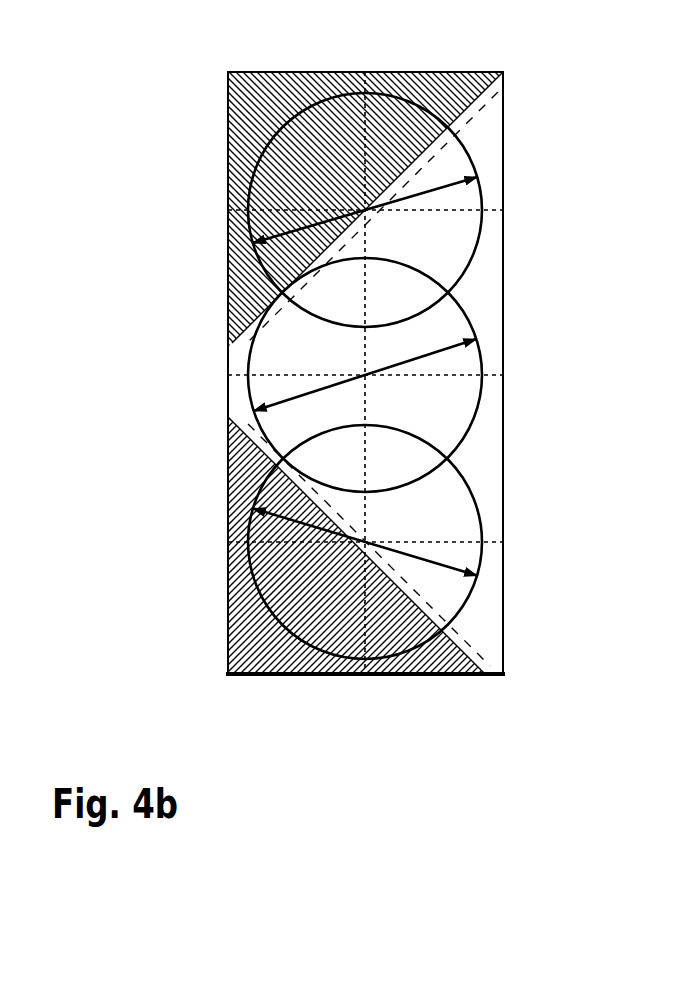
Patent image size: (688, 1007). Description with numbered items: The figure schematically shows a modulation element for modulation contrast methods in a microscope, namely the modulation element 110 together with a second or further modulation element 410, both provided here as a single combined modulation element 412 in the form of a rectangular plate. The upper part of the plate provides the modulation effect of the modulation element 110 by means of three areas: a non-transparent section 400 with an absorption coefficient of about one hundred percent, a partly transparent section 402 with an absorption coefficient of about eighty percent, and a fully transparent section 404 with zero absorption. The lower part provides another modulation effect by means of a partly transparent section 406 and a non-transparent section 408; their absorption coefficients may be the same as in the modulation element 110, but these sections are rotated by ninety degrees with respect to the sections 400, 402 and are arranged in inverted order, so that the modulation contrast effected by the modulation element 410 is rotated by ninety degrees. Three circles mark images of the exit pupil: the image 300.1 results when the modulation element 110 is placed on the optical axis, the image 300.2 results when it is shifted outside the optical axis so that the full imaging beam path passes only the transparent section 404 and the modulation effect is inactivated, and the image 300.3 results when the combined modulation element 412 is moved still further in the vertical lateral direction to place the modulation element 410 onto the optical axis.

The modulation element 110 is at (547, 117).
The image of the exit pupil 300.1 is at (253, 243).
The image of the exit pupil 300.2 is at (254, 411).
The image of the exit pupil 300.3 is at (253, 508).
The non-transparent section 400 is at (267, 95).
The partly transparent section 402 is at (472, 82).
The transparent section 404 is at (492, 147).
The partly transparent section 406 is at (467, 668).
The non-transparent section 408 is at (265, 660).
The second modulation element 410 is at (547, 599).
The combined modulation element 412 is at (599, 666).